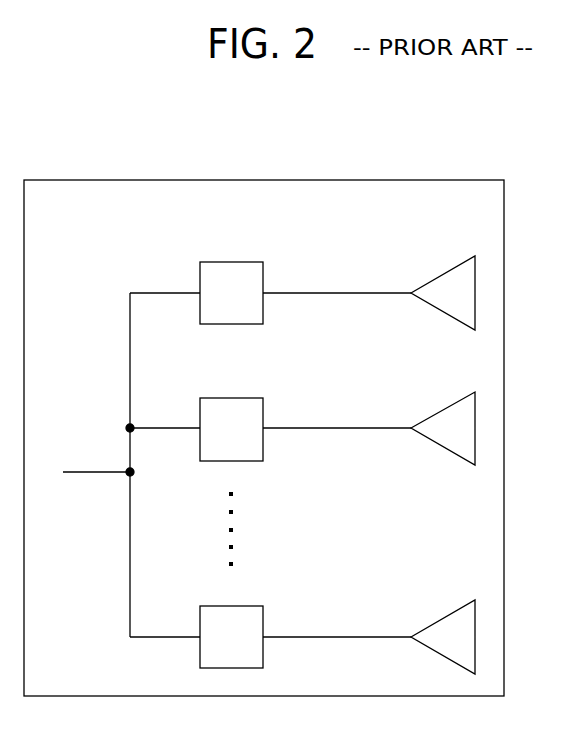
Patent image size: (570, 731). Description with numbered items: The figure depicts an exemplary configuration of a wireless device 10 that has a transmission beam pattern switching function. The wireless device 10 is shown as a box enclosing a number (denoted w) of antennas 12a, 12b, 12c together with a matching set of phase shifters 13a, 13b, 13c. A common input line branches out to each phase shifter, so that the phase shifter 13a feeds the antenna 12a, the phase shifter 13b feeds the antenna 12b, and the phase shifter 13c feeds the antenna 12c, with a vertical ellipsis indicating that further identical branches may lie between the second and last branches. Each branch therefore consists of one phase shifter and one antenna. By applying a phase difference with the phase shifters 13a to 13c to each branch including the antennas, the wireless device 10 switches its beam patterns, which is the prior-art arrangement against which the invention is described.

The wireless device 10 is at (442, 180).
The antenna 12a is at (453, 269).
The antenna 12b is at (453, 404).
The antenna 12c is at (453, 613).
The phase shifter 13a is at (247, 262).
The phase shifter 13b is at (247, 398).
The phase shifter 13c is at (247, 606).